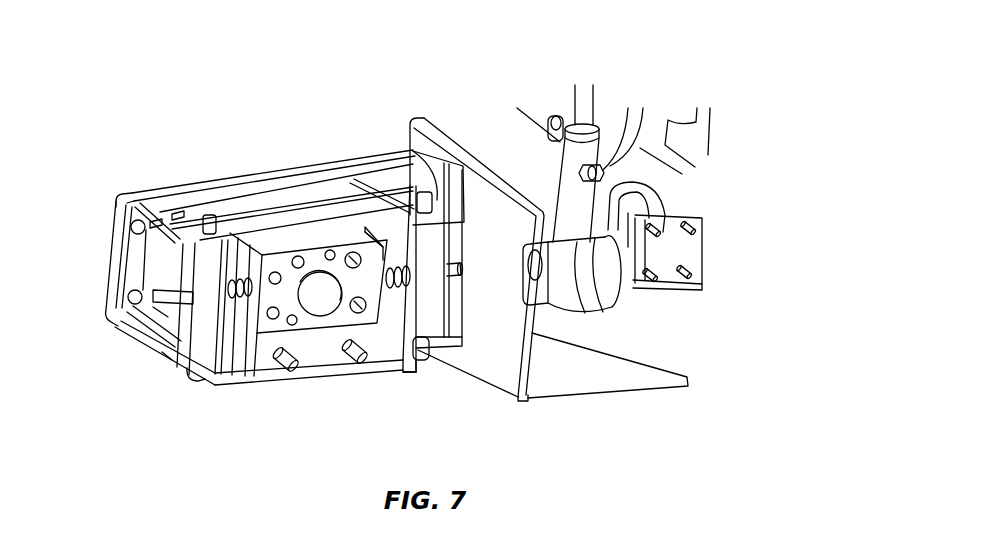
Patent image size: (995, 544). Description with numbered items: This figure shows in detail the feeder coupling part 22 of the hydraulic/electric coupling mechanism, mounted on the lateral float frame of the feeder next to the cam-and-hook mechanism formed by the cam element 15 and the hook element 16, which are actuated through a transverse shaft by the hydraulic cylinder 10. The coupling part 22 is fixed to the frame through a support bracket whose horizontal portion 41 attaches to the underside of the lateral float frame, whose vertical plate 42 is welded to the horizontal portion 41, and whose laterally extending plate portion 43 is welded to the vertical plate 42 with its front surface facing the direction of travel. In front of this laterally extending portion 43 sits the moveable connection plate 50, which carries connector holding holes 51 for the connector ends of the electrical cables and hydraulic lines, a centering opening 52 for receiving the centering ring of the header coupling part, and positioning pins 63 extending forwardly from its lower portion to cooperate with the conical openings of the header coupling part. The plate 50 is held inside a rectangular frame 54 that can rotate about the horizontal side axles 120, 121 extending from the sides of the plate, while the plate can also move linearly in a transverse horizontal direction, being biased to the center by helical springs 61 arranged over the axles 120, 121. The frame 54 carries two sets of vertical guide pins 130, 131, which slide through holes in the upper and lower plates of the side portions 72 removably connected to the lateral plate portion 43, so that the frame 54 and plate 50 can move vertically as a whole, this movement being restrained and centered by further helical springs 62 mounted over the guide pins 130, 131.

The hydraulic cylinder 10 is at (572, 190).
The cam element 15 is at (615, 300).
The hook element 16 is at (655, 202).
The feeder coupling part 22 is at (332, 122).
The horizontal portion 41 is at (617, 367).
The vertical plate 42 is at (497, 203).
The laterally extending plate portion 43 is at (335, 190).
The moveable connection plate 50 is at (312, 238).
The connector holding holes 51 is at (350, 253).
The centering opening 52 is at (322, 297).
The rectangular frame 54 is at (413, 372).
The helical springs 61 is at (246, 380).
The helical springs 62 is at (168, 357).
The positioning pins 63 is at (297, 373).
The side portions 72 is at (168, 205).
The horizontal side axle 120 is at (145, 330).
The horizontal side axle 121 is at (465, 270).
The vertical guide pins 130 is at (210, 215).
The vertical guide pins 131 is at (437, 200).